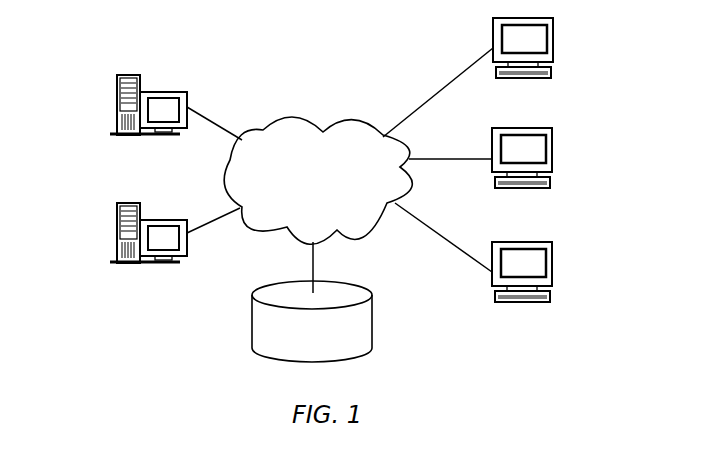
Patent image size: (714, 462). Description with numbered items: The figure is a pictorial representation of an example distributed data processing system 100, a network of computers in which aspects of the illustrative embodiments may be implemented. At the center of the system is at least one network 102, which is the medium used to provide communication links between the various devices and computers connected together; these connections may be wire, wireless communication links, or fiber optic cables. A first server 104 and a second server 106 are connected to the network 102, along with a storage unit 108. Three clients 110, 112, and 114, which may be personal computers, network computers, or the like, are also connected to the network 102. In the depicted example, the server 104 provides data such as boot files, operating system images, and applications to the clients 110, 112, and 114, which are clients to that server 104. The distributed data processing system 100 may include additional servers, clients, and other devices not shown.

The distributed data processing system 100 is at (380, 54).
The network 102 is at (302, 118).
The server 104 is at (117, 107).
The server 106 is at (117, 232).
The storage unit 108 is at (252, 320).
The client 110 is at (553, 48).
The client 112 is at (552, 158).
The client 114 is at (552, 272).